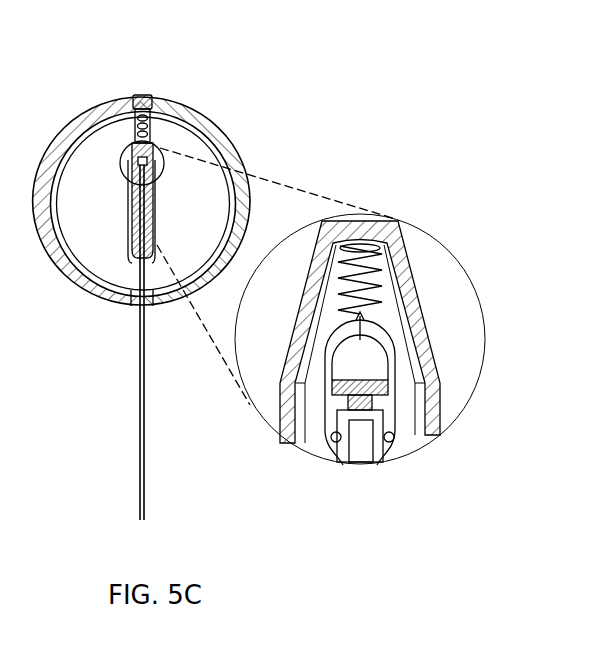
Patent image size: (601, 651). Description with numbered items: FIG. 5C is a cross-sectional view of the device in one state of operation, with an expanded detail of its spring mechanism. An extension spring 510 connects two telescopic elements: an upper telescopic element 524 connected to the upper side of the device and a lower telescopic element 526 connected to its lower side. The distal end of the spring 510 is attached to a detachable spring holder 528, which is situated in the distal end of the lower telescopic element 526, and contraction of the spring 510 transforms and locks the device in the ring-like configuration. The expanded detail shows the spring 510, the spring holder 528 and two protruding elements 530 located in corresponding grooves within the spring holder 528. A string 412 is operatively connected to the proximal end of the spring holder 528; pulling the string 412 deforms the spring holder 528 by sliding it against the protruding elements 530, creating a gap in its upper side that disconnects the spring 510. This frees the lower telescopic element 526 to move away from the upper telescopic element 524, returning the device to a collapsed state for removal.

The extension spring 510 is at (312, 250).
The string 412 is at (140, 485).
The upper telescopic element 524 is at (413, 332).
The lower telescopic element 526 is at (417, 427).
The detachable spring holder 528 is at (390, 326).
The protruding elements 530 is at (388, 443).